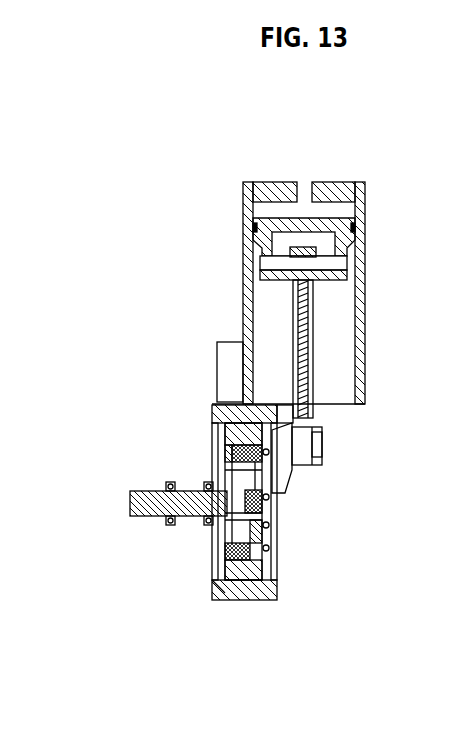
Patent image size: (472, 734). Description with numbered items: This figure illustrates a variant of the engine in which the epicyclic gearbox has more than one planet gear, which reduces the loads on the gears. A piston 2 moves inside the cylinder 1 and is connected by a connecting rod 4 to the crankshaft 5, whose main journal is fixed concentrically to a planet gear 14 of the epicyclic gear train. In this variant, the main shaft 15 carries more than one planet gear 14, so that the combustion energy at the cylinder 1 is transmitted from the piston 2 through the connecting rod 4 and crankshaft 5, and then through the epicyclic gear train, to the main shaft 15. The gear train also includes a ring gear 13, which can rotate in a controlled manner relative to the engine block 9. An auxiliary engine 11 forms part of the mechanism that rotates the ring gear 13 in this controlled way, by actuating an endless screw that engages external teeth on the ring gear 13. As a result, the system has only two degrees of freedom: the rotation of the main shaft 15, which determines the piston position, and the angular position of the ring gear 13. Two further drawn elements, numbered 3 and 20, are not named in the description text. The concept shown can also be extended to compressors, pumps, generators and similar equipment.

The cylinder 1 is at (243, 186).
The piston 2 is at (265, 225).
The piston plate 3 is at (330, 265).
The connecting rod 4 is at (314, 347).
The crankshaft 5 is at (291, 478).
The engine block 9 is at (255, 602).
The auxiliary engine 11 is at (238, 365).
The ring gear 13 is at (212, 600).
The planet gear 14 is at (267, 495).
The main shaft 15 is at (165, 505).
The bearing column 20 is at (252, 535).